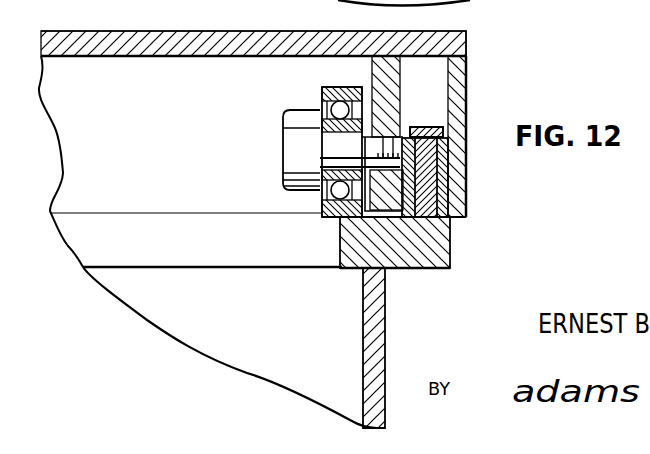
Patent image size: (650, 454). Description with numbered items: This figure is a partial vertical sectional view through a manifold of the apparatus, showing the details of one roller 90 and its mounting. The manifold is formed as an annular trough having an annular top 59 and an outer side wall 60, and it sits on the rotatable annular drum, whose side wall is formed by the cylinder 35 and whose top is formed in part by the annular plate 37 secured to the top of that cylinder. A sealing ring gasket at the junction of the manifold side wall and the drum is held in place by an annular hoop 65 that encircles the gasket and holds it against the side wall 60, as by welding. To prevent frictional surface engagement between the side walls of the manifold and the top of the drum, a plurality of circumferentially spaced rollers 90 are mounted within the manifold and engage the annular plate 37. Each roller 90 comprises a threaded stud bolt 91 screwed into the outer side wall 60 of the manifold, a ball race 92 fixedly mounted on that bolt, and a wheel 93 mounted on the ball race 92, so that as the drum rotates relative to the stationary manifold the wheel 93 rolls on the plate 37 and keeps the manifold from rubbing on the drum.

The annular top 59 is at (188, 29).
The annular hoop 65 is at (470, 93).
The outer side wall 60 is at (397, 95).
The threaded stud bolt 91 is at (392, 132).
The roller 90 is at (293, 97).
The wheel 93 is at (322, 202).
The ball race 92 is at (290, 143).
The annular plate 37 is at (445, 246).
The cylinder 35 is at (385, 330).